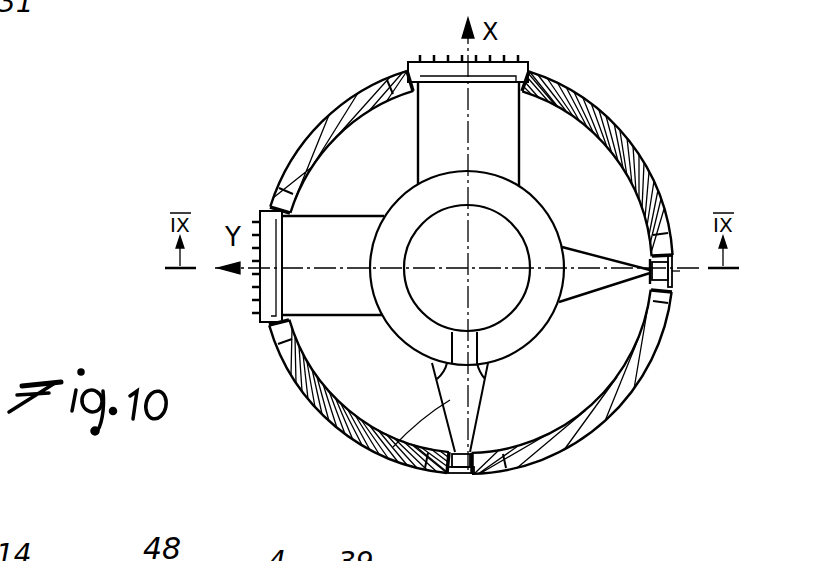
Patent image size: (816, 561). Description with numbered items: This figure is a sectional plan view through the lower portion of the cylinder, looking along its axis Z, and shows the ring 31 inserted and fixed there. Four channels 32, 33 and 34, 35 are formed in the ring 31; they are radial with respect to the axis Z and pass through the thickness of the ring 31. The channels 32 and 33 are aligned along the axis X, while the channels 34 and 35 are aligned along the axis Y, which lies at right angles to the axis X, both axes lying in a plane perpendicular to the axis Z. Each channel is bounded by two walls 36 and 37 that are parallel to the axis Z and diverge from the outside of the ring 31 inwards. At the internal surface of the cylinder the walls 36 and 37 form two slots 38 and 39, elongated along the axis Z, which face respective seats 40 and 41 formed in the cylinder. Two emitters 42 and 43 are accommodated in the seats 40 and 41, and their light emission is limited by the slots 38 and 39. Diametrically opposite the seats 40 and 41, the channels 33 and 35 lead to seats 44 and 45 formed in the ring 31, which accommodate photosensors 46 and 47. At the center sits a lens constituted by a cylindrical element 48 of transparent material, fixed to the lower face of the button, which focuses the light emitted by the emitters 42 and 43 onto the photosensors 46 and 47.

The ring 31 is at (333, 147).
The channel 32 is at (380, 452).
The channel 33 is at (507, 125).
The channel 34 is at (583, 258).
The channel 35 is at (315, 235).
The wall 36 is at (452, 334).
The wall 37 is at (477, 334).
The slot 38 is at (493, 463).
The slot 39 is at (665, 234).
The seat 40 is at (493, 473).
The seat 41 is at (655, 330).
The emitter 42 is at (470, 482).
The emitter 43 is at (684, 272).
The seat 44 is at (397, 83).
The seat 45 is at (283, 360).
The photosensor 46 is at (430, 72).
The photosensor 47 is at (276, 320).
The cylindrical element 48 is at (488, 232).